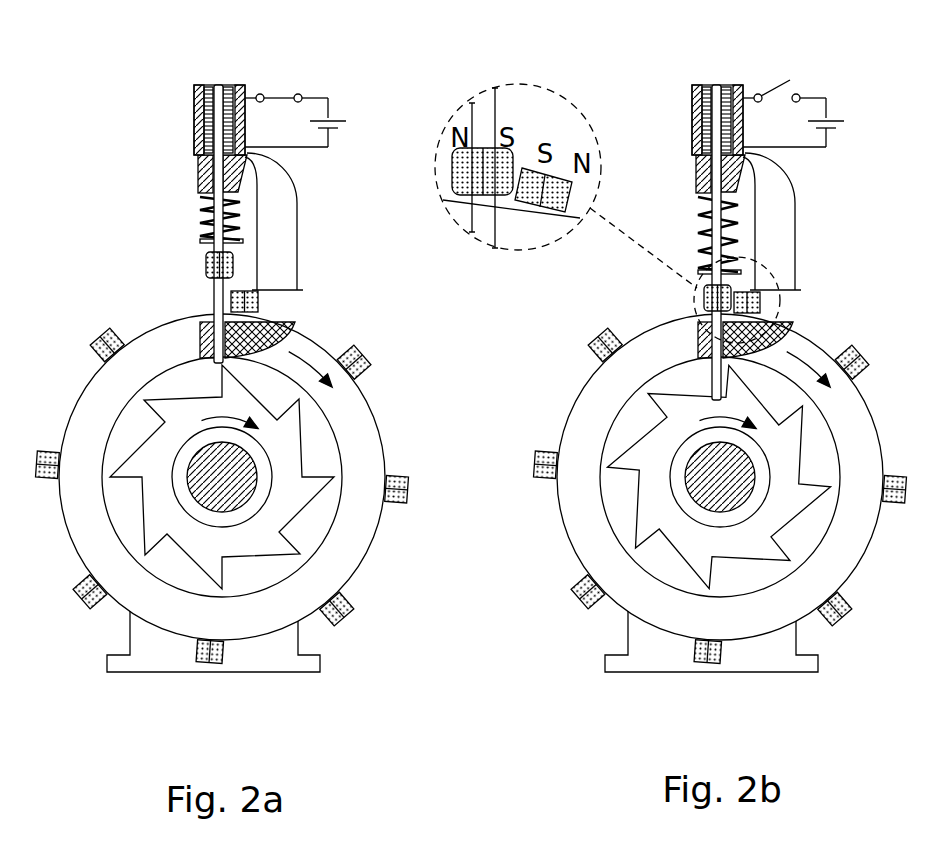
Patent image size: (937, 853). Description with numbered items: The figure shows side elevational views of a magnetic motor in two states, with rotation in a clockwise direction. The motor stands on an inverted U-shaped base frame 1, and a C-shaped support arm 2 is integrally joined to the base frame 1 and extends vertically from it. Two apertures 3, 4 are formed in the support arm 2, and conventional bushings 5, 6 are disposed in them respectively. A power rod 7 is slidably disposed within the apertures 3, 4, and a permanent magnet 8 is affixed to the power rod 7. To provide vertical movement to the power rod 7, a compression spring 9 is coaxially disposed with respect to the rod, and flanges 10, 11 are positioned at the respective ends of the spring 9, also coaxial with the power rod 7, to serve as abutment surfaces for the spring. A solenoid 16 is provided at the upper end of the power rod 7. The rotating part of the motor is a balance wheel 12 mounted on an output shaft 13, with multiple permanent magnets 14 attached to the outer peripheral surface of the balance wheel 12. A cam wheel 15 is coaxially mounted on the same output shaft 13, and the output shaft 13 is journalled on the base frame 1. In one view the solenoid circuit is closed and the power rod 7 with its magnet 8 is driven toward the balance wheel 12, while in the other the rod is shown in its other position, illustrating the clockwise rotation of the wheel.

The base frame 1 is at (320, 667).
The support arm 2 is at (283, 236).
The aperture 3 is at (200, 168).
The aperture 4 is at (118, 367).
The bushing 5 is at (252, 168).
The bushing 6 is at (300, 343).
The power rod 7 is at (213, 295).
The permanent magnet 8 is at (206, 268).
The compression spring 9 is at (200, 222).
The flange 10 is at (200, 196).
The flange 11 is at (258, 288).
The balance wheel 12 is at (360, 425).
The output shaft 13 is at (228, 494).
The permanent magnets 14 is at (397, 505).
The cam wheel 15 is at (287, 455).
The solenoid 16 is at (236, 85).